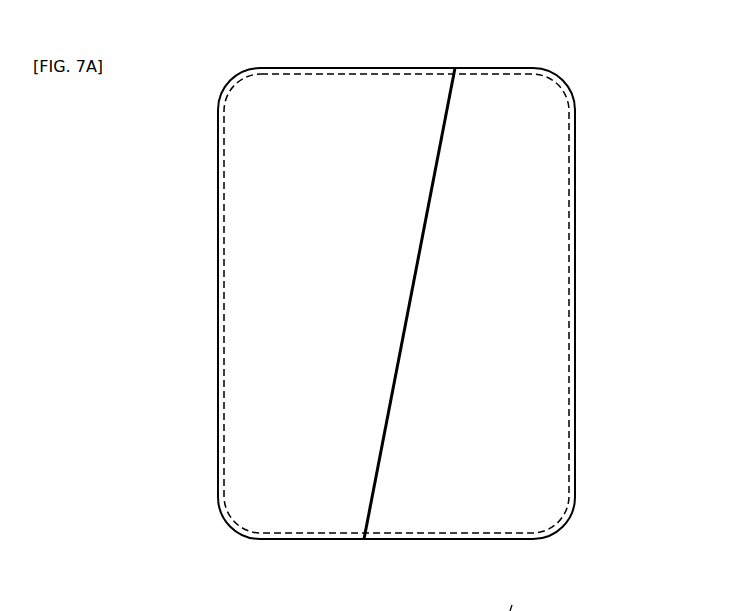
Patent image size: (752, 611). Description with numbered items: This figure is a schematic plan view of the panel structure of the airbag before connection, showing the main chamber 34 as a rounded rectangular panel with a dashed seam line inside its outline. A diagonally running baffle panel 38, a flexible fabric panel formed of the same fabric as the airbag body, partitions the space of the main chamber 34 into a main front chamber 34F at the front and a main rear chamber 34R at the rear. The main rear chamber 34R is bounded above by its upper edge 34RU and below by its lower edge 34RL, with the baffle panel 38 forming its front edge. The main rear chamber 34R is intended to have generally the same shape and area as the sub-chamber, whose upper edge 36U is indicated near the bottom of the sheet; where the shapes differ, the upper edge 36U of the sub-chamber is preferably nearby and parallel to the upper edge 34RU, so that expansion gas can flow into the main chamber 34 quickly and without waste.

The main chamber 34 is at (572, 75).
The baffle panel 38 is at (390, 386).
The upper edge 34RU is at (514, 66).
The main rear chamber 34R is at (553, 182).
The main front chamber 34F is at (235, 189).
The lower edge 34RL is at (403, 541).
The upper edge 36U is at (510, 610).